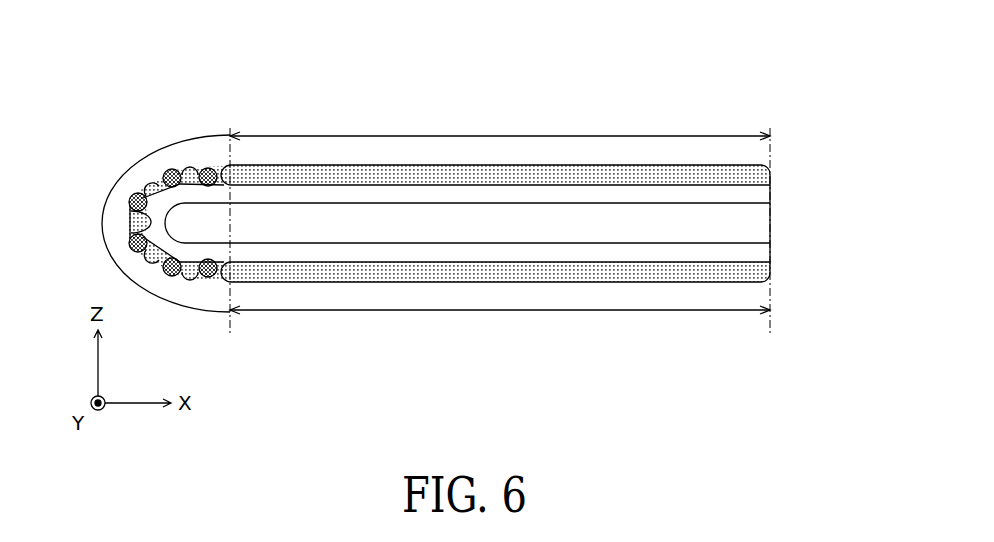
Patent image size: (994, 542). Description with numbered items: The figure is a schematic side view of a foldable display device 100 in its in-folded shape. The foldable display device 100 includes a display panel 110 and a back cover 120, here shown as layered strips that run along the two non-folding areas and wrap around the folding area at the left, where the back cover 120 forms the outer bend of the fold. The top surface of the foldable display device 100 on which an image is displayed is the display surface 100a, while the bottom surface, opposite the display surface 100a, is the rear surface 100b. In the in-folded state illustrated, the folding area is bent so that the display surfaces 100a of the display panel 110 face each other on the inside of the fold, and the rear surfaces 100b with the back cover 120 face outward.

The foldable display device 100 is at (454, 176).
The display surface 100a is at (634, 214).
The rear surface 100b is at (685, 164).
The display panel 110 is at (757, 196).
The back cover 120 is at (757, 176).